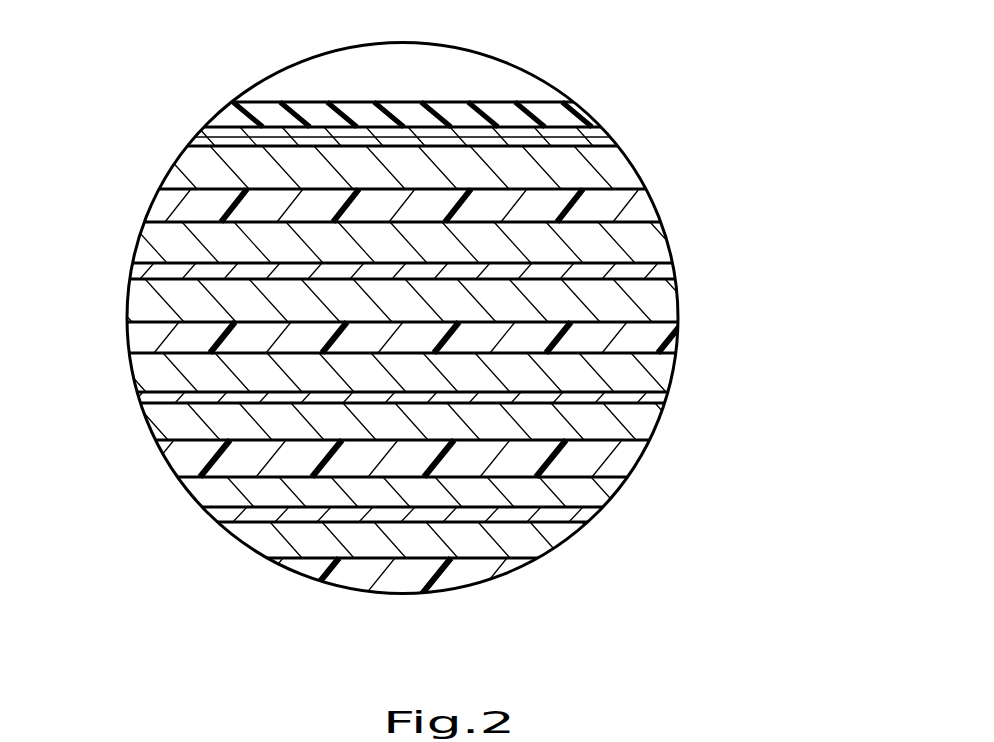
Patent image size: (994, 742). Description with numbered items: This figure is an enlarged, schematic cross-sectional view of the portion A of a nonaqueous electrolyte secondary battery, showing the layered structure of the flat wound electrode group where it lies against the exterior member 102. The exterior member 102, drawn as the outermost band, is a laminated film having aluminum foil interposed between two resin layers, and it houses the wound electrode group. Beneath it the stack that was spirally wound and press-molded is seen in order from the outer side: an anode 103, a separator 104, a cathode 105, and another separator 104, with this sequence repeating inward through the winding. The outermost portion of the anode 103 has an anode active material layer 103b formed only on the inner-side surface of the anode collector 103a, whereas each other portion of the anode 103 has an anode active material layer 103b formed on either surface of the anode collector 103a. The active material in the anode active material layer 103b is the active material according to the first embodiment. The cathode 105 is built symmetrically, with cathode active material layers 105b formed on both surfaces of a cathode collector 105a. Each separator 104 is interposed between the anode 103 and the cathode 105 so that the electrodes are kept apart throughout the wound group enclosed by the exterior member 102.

The portion A is at (276, 92).
The exterior member 102 is at (585, 112).
The anode 103 is at (796, 85).
The anode collector 103a is at (612, 140).
The anode active material layer 103b is at (612, 170).
The separator 104 is at (165, 205).
The cathode 105 is at (838, 185).
The cathode collector 105a is at (648, 272).
The cathode active material layer 105b is at (645, 233).